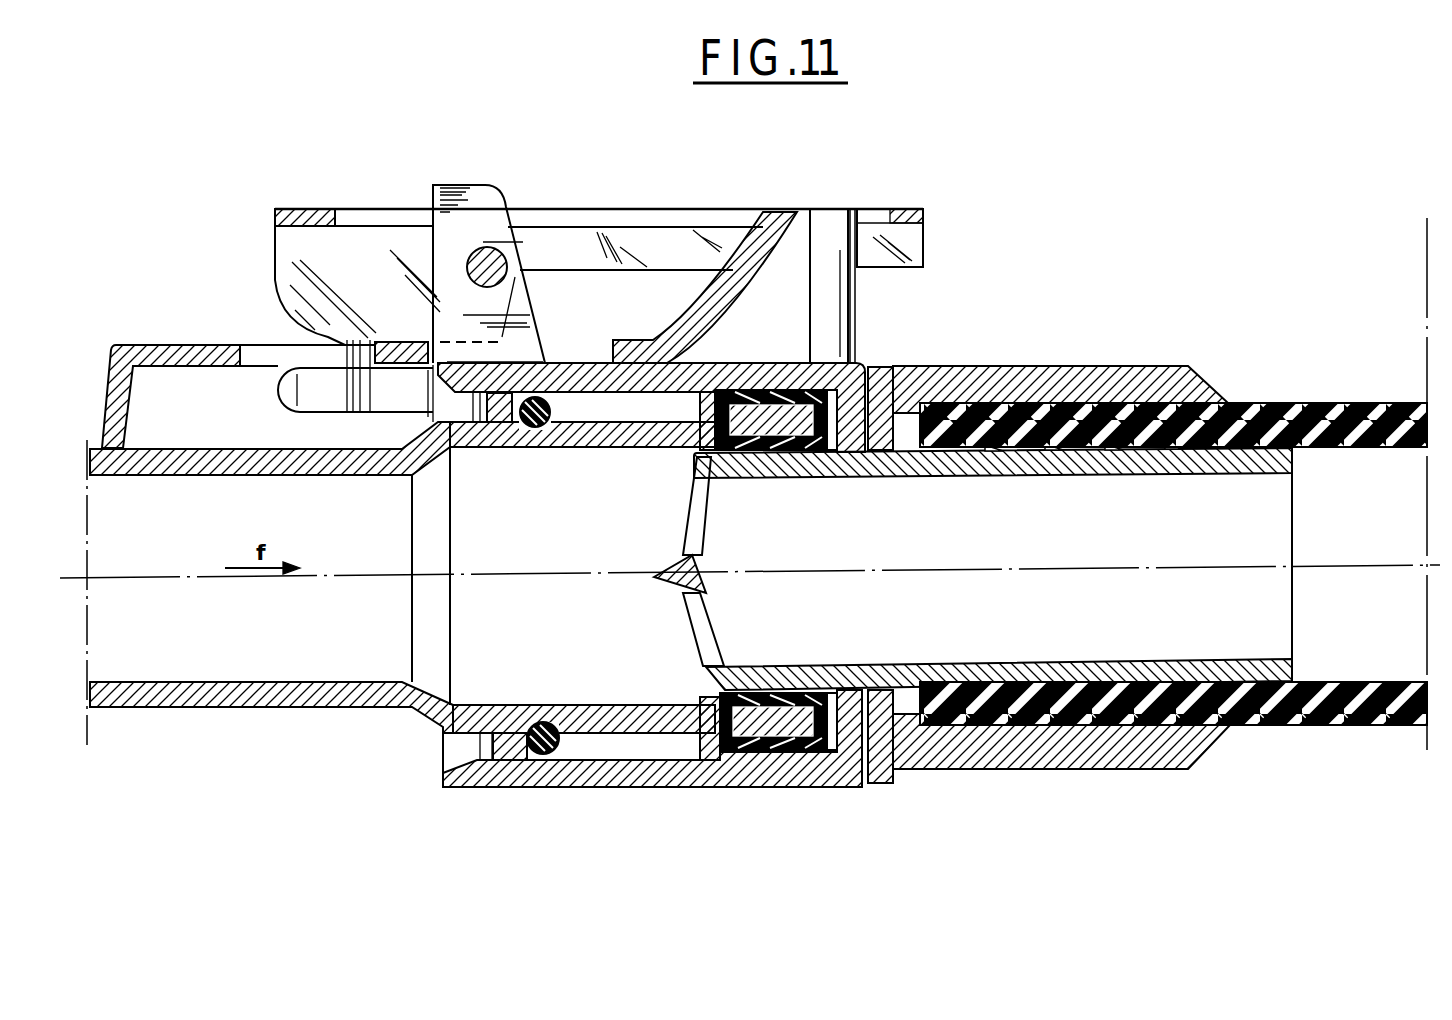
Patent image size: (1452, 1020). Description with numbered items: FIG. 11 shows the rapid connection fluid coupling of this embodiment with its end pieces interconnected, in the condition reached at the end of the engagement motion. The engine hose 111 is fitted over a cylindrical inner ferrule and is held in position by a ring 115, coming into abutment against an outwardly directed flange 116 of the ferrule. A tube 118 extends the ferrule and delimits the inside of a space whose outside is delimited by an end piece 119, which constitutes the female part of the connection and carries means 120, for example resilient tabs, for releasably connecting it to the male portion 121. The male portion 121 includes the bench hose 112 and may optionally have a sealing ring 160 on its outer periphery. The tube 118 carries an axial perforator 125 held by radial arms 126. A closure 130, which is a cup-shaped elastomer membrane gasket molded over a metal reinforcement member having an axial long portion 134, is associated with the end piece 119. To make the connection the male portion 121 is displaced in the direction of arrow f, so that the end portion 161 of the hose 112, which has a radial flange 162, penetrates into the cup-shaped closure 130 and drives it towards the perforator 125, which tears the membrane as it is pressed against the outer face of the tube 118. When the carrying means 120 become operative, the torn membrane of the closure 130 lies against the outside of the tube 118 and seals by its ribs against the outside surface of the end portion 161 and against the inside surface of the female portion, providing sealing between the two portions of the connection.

The hose 111 is at (1335, 435).
The hose 112 is at (276, 708).
The ring 115 is at (1100, 388).
The outwardly directed flange 116 is at (910, 430).
The tube 118 is at (768, 470).
The end piece 119 is at (675, 773).
The carrying means 120 is at (634, 203).
The male portion 121 is at (646, 449).
The perforator 125 is at (673, 557).
The radial arms 126 is at (705, 620).
The closure 130 is at (792, 757).
The axial long portion 134 is at (768, 398).
The sealing ring 160 is at (528, 430).
The end portion 161 is at (606, 716).
The radial flange 162 is at (710, 745).